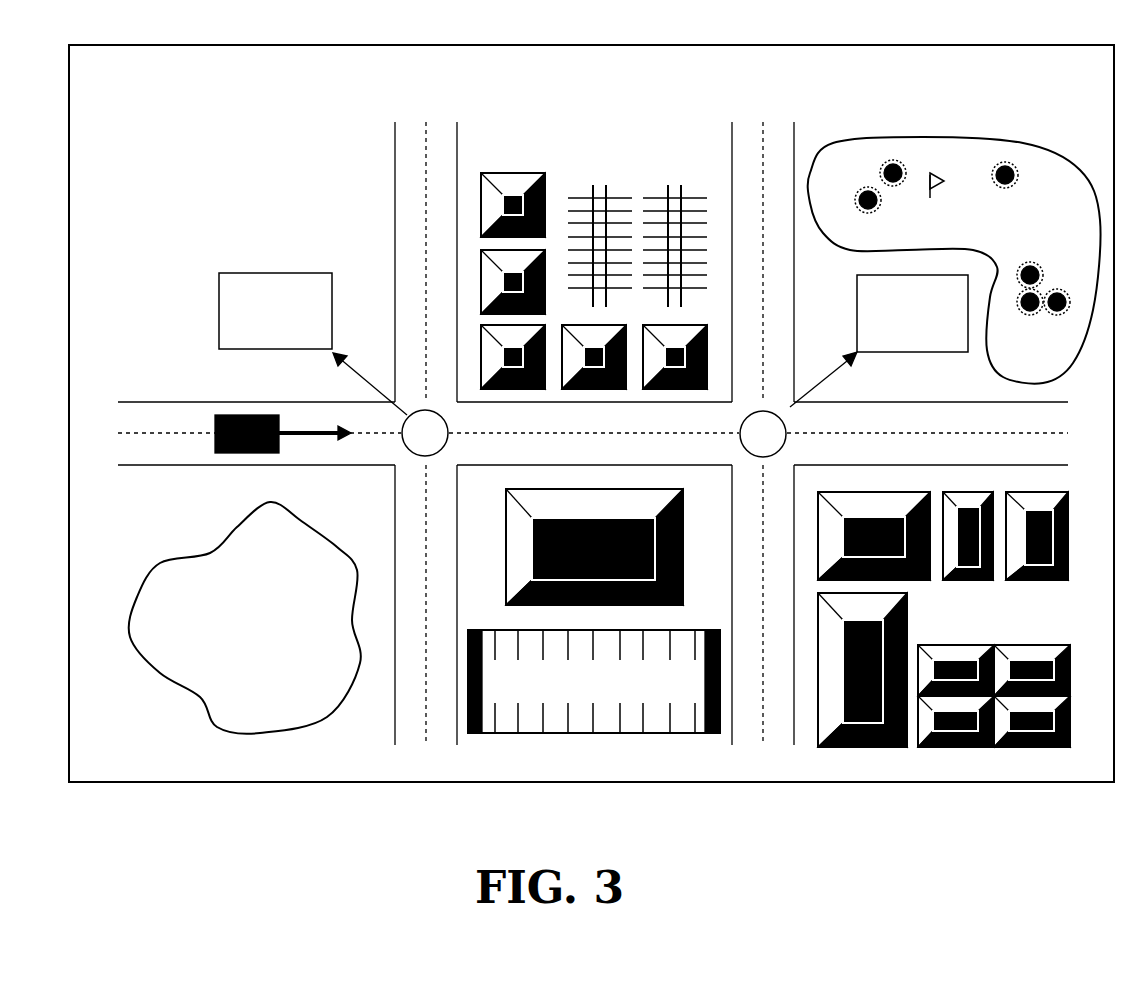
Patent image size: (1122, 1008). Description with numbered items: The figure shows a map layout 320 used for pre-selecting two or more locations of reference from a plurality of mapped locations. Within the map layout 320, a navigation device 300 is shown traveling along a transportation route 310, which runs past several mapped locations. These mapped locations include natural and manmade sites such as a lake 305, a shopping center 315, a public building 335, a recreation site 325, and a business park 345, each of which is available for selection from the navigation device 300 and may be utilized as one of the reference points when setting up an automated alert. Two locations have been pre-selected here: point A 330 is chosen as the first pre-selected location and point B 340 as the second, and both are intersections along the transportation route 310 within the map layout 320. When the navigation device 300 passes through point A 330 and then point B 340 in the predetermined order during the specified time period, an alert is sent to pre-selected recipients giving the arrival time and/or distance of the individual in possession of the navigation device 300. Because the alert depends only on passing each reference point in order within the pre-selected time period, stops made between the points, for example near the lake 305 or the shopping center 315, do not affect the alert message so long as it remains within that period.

The navigation device 300 is at (237, 453).
The lake 305 is at (237, 623).
The transportation route 310 is at (407, 173).
The shopping center 315 is at (583, 160).
The map layout 320 is at (628, 97).
The recreation site 325 is at (1008, 237).
The point A 330 is at (255, 341).
The public building 335 is at (575, 560).
The point B 340 is at (892, 343).
The business park 345 is at (975, 632).